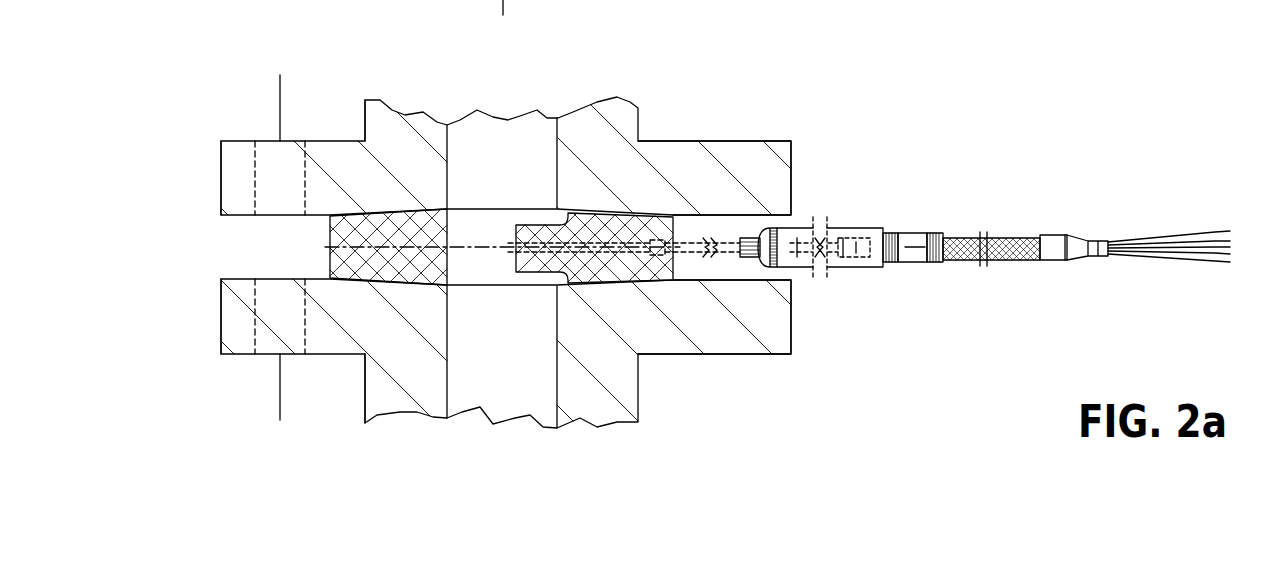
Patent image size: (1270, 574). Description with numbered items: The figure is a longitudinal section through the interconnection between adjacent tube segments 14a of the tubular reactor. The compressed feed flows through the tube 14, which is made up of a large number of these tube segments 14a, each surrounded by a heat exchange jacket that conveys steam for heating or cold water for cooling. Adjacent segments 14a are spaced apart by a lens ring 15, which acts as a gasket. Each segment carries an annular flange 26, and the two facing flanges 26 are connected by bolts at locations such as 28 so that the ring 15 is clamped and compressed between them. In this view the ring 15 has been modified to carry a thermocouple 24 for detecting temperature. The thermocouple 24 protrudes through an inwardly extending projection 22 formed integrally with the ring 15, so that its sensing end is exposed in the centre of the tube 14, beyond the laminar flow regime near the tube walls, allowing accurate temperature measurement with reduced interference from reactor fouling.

The tube 14 is at (610, 84).
The tube segments 14a is at (737, 141).
The lens ring 15 is at (360, 227).
The inwardly extending projection 22 is at (543, 240).
The thermocouple 24 is at (510, 240).
The annular flange 26 is at (237, 180).
The bolt location 28 is at (280, 116).